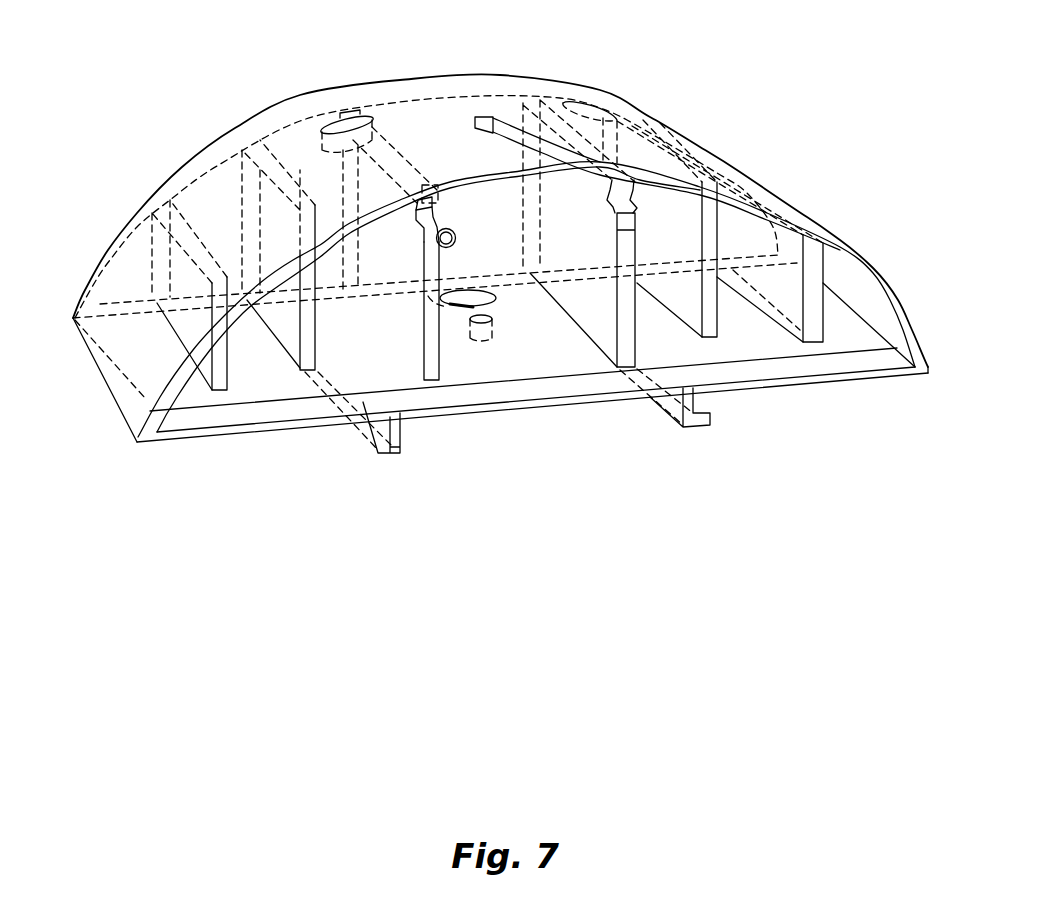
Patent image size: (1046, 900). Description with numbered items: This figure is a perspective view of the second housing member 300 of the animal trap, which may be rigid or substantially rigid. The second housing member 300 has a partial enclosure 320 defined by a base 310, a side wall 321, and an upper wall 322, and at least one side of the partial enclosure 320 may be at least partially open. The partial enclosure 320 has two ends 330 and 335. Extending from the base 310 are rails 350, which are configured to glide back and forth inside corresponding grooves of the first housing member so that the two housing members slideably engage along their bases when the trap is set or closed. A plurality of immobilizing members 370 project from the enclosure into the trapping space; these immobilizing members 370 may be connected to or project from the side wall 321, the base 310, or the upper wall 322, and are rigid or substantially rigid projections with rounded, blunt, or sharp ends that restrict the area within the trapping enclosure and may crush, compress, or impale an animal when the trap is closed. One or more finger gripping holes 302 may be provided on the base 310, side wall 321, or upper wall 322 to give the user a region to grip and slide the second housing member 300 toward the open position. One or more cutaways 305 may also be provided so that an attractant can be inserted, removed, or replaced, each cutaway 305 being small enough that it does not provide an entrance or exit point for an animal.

The second housing member 300 is at (497, 285).
The finger gripping holes 302 is at (333, 127).
The cutaways 305 is at (457, 317).
The base 310 is at (580, 390).
The partial enclosure 320 is at (263, 378).
The side wall 321 is at (462, 216).
The upper wall 322 is at (240, 132).
The end 330 is at (88, 267).
The end 335 is at (885, 288).
The rails 350 is at (390, 457).
The immobilizing members 370 is at (212, 390).